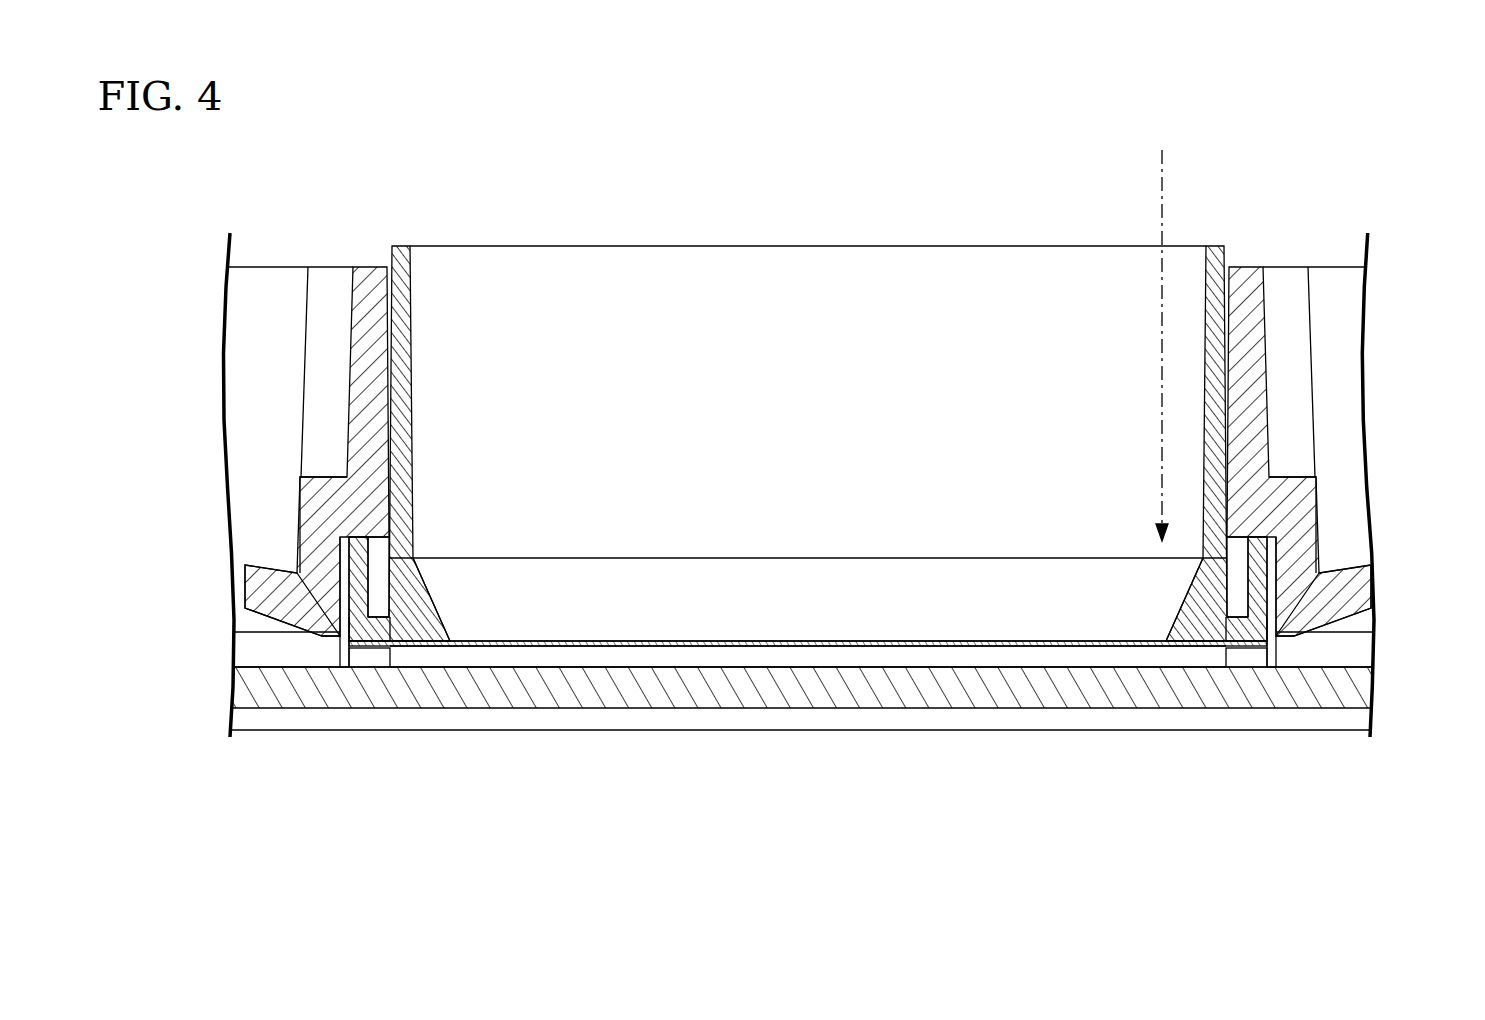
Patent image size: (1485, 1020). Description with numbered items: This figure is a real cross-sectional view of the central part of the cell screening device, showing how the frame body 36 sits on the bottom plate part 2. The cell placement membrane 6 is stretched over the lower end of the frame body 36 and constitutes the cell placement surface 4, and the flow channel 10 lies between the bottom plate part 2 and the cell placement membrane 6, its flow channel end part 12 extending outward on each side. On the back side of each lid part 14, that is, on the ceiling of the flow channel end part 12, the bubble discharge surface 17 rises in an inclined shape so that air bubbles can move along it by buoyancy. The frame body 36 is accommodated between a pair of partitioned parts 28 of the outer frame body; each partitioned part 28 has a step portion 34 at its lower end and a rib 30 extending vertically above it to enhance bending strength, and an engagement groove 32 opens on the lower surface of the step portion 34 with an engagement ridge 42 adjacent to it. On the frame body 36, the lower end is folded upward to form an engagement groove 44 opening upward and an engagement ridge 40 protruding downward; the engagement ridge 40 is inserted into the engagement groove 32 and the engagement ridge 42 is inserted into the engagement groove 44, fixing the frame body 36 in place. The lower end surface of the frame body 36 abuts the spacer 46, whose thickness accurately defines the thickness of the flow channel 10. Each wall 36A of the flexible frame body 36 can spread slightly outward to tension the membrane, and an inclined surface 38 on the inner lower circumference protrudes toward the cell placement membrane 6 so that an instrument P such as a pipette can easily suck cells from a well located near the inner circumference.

The bottom plate part 2 is at (890, 709).
The cell placement surface 4 is at (695, 643).
The cell placement membrane 6 is at (618, 641).
The flow channel 10 is at (818, 656).
The flow channel end part 12 is at (268, 652).
The lid part 14 is at (1352, 562).
The bubble discharge surface 17 is at (262, 620).
The partitioned part 28 is at (372, 267).
The rib 30 is at (304, 290).
The engagement groove 32 is at (352, 553).
The step portion 34 is at (298, 500).
The frame body 36 is at (810, 246).
The wall 36A is at (399, 246).
The inclined surface 38 is at (440, 600).
The engagement ridge 40 is at (340, 602).
The engagement ridge 42 is at (370, 658).
The engagement groove 44 is at (387, 588).
The spacer 46 is at (380, 620).
The instrument P is at (1162, 331).